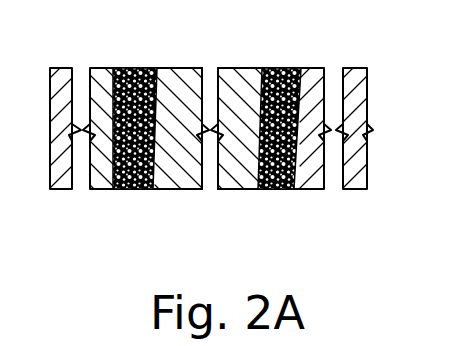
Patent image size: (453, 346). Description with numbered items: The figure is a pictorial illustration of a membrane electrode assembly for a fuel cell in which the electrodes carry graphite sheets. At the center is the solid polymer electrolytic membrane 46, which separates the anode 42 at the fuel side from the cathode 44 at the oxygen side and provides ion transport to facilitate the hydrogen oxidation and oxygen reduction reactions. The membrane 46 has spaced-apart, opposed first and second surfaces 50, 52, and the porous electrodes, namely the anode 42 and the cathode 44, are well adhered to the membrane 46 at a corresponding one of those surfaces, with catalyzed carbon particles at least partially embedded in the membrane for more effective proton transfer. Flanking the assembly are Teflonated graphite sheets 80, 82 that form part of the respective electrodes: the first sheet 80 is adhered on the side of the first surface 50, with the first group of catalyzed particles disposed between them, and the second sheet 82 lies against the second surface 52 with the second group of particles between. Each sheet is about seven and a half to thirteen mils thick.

The first Teflonated graphite sheet 80 is at (61, 68).
The anode 42 is at (129, 190).
The first surface 50 is at (173, 68).
The solid polymer electrolytic membrane 46 is at (200, 68).
The cathode 44 is at (280, 190).
The second surface 52 is at (259, 101).
The second Teflonated graphite sheet 82 is at (352, 68).